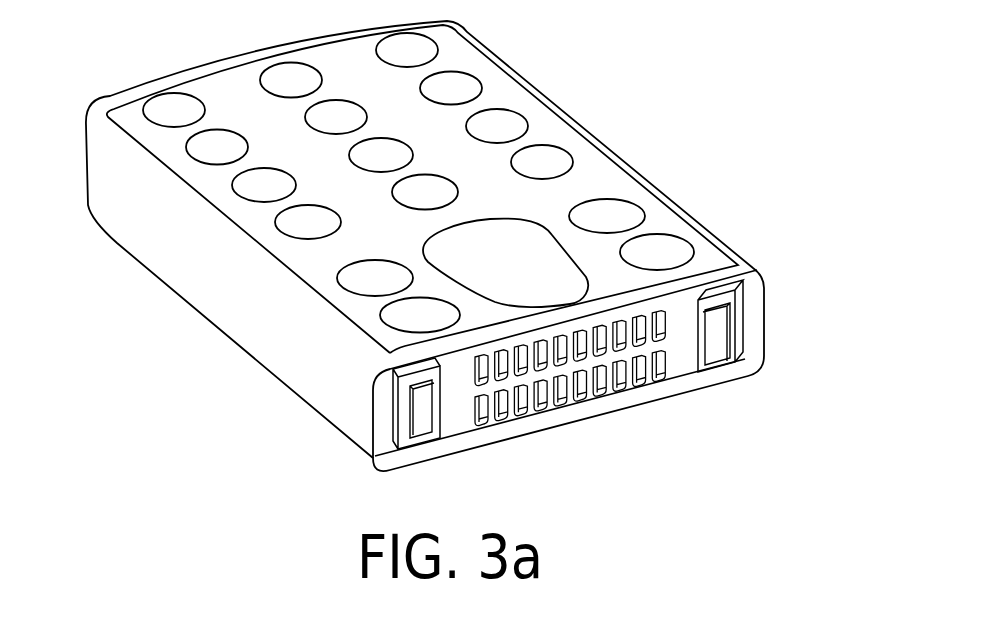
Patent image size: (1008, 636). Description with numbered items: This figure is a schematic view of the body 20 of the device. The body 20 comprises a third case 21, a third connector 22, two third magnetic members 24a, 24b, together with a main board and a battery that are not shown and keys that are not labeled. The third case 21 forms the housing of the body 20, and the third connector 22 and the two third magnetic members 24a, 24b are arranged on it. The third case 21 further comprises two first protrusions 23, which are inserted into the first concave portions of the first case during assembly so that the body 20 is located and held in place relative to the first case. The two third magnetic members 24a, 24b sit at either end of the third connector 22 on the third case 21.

The body 20 is at (77, 22).
The third case 21 is at (217, 288).
The third connector 22 is at (682, 312).
The first protrusion 23 is at (738, 293).
The third magnetic member 24a is at (413, 401).
The third magnetic member 24b is at (720, 328).